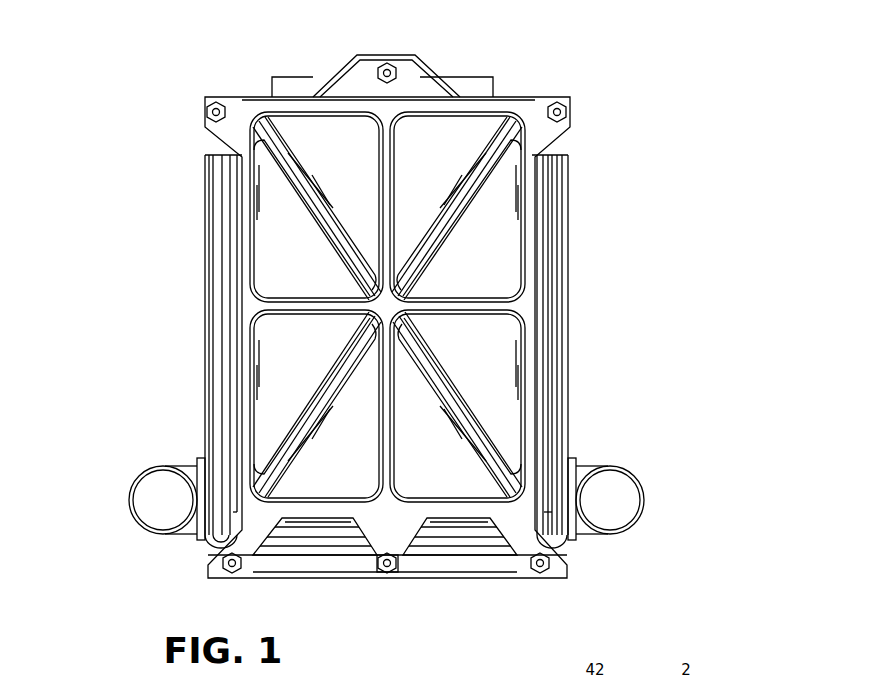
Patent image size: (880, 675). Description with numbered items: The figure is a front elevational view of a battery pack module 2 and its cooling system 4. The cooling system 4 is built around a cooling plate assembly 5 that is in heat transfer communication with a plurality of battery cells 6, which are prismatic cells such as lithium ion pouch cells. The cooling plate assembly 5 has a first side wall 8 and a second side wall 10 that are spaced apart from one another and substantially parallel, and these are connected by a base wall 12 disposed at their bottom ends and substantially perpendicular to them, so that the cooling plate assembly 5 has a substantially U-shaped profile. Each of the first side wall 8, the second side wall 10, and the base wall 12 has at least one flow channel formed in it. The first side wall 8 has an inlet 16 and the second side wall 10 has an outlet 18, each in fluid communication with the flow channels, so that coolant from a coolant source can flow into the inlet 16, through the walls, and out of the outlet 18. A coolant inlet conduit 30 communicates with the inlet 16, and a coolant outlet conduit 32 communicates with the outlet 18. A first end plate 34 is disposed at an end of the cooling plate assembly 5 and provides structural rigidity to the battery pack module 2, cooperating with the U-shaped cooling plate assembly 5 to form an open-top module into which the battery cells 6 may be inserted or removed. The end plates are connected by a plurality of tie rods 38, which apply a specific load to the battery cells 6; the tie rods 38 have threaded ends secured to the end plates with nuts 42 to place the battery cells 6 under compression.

The battery pack module 2 is at (612, 88).
The cooling system 4 is at (571, 178).
The cooling plate assembly 5 is at (569, 216).
The battery cells 6 is at (494, 96).
The first side wall 8 is at (204, 257).
The second side wall 10 is at (569, 370).
The base wall 12 is at (458, 570).
The inlet 16 is at (186, 500).
The outlet 18 is at (590, 500).
The coolant inlet conduit 30 is at (132, 490).
The coolant outlet conduit 32 is at (641, 488).
The first end plate 34 is at (362, 222).
The tie rods 38 is at (366, 58).
The nuts 42 is at (214, 101).